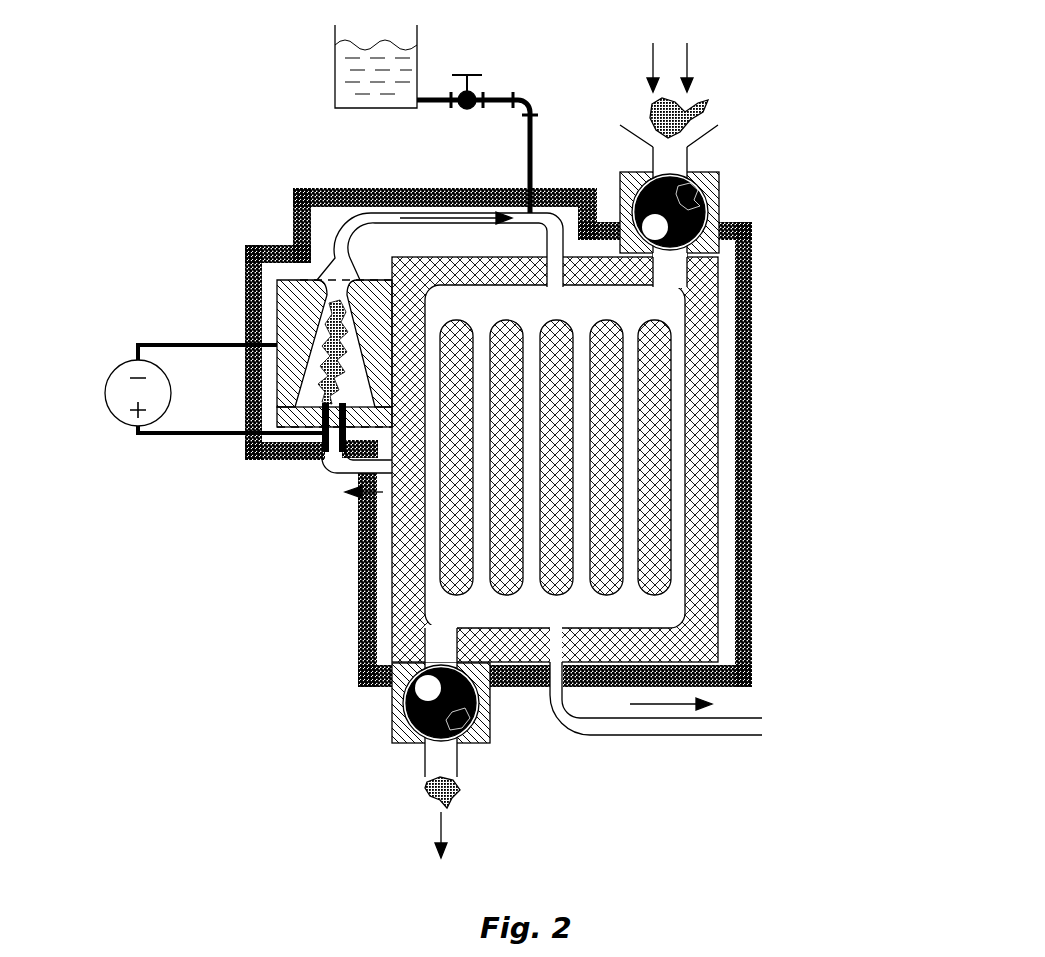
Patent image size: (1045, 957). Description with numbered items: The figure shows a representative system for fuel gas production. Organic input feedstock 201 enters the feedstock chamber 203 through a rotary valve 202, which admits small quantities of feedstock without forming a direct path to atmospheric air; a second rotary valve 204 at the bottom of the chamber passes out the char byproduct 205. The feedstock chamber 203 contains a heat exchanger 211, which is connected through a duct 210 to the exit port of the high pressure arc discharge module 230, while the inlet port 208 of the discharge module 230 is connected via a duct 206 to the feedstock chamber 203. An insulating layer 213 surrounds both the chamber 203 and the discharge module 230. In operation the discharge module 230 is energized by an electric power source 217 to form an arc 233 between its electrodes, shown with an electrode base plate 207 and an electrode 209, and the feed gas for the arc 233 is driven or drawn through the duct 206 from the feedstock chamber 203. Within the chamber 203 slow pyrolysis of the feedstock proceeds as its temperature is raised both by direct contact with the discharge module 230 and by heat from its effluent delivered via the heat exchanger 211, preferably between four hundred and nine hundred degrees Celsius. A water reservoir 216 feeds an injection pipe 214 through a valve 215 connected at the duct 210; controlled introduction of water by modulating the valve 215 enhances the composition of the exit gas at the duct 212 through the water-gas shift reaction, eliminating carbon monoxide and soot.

The input feedstock 201 is at (710, 110).
The rotary valve 202 is at (720, 202).
The feedstock chamber 203 is at (720, 377).
The rotary valve 204 is at (392, 703).
The char byproduct 205 is at (425, 788).
The duct 206 is at (332, 455).
The electrode base plate 207 is at (310, 423).
The inlet port 208 is at (332, 440).
The electrode 209 is at (300, 353).
The duct 210 is at (397, 212).
The heat exchanger 211 is at (628, 302).
The duct 212 is at (672, 738).
The insulating layer 213 is at (745, 540).
The injection pipe 214 is at (533, 177).
The valve 215 is at (480, 92).
The water reservoir 216 is at (335, 76).
The electric power source 217 is at (97, 393).
The discharge module 230 is at (287, 280).
The arc 233 is at (292, 318).